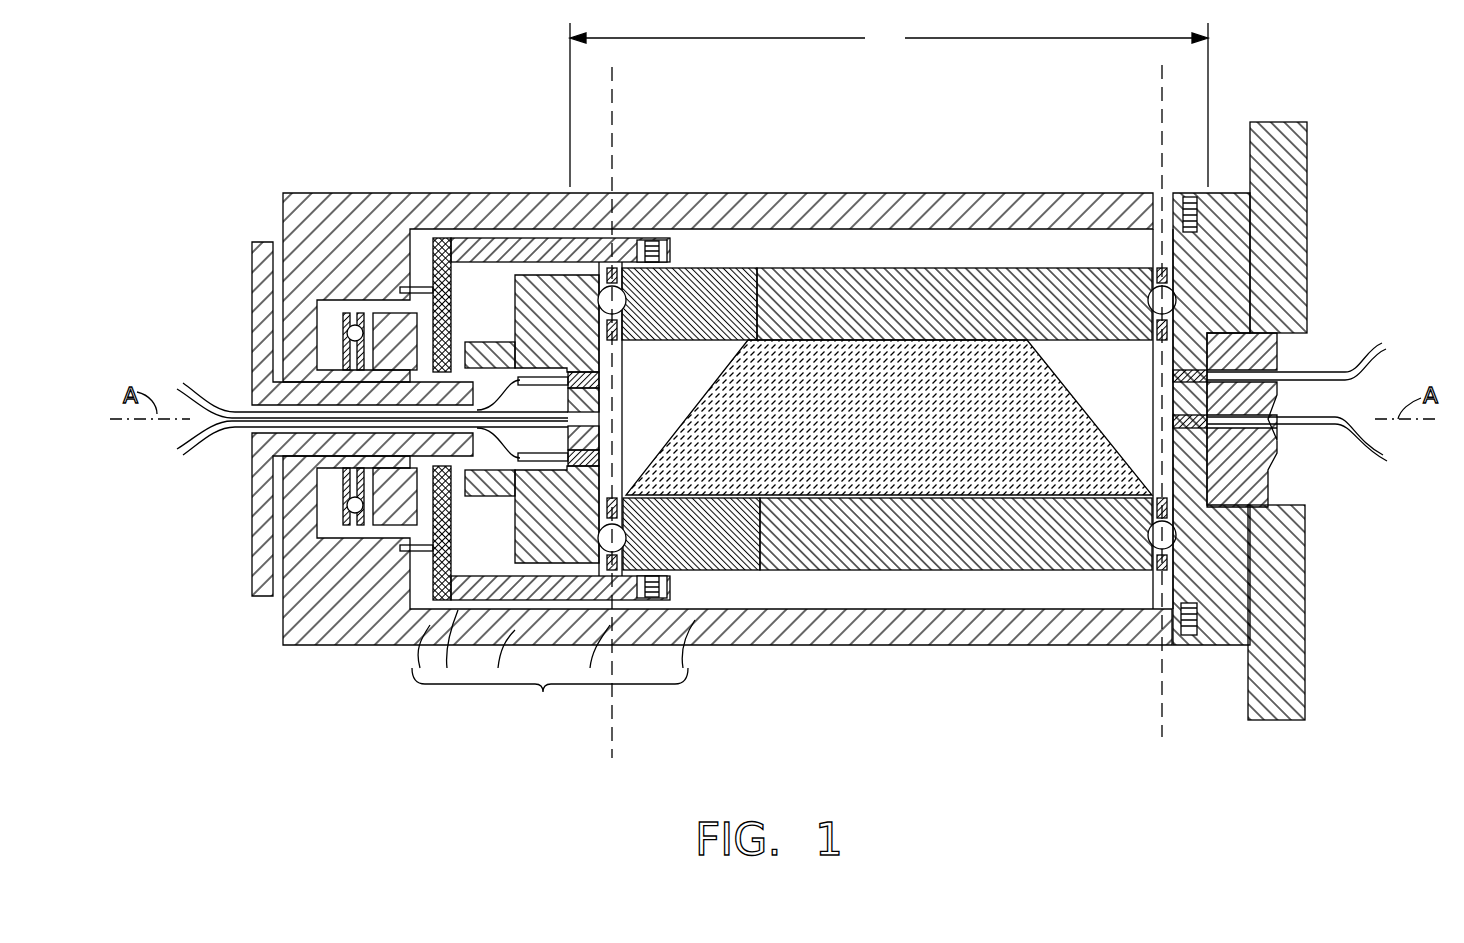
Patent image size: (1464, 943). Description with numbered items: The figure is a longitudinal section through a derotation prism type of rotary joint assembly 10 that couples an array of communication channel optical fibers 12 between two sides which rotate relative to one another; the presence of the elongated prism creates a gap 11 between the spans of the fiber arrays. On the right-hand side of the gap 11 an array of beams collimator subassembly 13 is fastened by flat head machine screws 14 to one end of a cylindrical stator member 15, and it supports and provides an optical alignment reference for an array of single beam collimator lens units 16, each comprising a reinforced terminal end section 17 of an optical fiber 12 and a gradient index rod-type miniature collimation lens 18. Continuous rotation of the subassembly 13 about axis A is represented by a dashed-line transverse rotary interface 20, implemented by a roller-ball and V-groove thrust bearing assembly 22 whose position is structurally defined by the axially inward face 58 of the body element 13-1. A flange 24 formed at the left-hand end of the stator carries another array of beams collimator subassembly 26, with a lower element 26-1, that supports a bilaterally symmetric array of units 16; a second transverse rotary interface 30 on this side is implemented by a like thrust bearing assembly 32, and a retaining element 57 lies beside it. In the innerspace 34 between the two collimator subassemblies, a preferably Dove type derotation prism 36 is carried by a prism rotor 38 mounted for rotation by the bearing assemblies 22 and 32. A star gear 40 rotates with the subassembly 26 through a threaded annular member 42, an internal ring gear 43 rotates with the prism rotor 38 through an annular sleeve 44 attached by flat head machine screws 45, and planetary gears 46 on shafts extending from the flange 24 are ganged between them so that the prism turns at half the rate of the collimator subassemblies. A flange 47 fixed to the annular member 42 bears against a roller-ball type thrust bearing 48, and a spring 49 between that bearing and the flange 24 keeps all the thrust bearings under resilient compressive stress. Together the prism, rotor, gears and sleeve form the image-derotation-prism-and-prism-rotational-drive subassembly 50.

The rotary joint assembly 10 is at (832, 655).
The gap 11 is at (889, 105).
The optical fiber 12 is at (245, 412).
The array of beams collimator subassembly 13 is at (1262, 325).
The body element 13-1 is at (1232, 212).
The flat head machine screws 14 is at (1180, 193).
The cylindrical stator member 15 is at (1003, 193).
The single beam collimator lens unit 16 is at (595, 450).
The reinforced terminal end section 17 is at (535, 427).
The rod-type miniature collimation lens 18 is at (606, 377).
The transverse rotary interface 20 is at (1162, 95).
The thrust bearing assembly 22 is at (1250, 535).
The flange 24 is at (293, 340).
The array of beams collimator subassembly 26 is at (675, 330).
The lower lock piece 26-1 is at (548, 538).
The transverse rotary interface 30 is at (617, 106).
The thrust bearing assembly 32 is at (640, 268).
The innerspace 34 is at (882, 604).
The derotation prism 36 is at (735, 375).
The prism rotor 38 is at (822, 270).
The star gear 40 is at (458, 342).
The annular member 42 is at (520, 276).
The internal ring gear 43 is at (390, 313).
The annular sleeve 44 is at (522, 240).
The flat head machine screws 45 is at (655, 245).
The planetary gears 46 is at (442, 238).
The flange 47 is at (355, 325).
The roller-ball type thrust bearing 48 is at (352, 305).
The spring 49 is at (318, 490).
The image-derotation-prism-and-prism-rotational-drive subassembly 50 is at (553, 665).
The guide plate 57 is at (598, 262).
The axially inward face 58 is at (1186, 200).